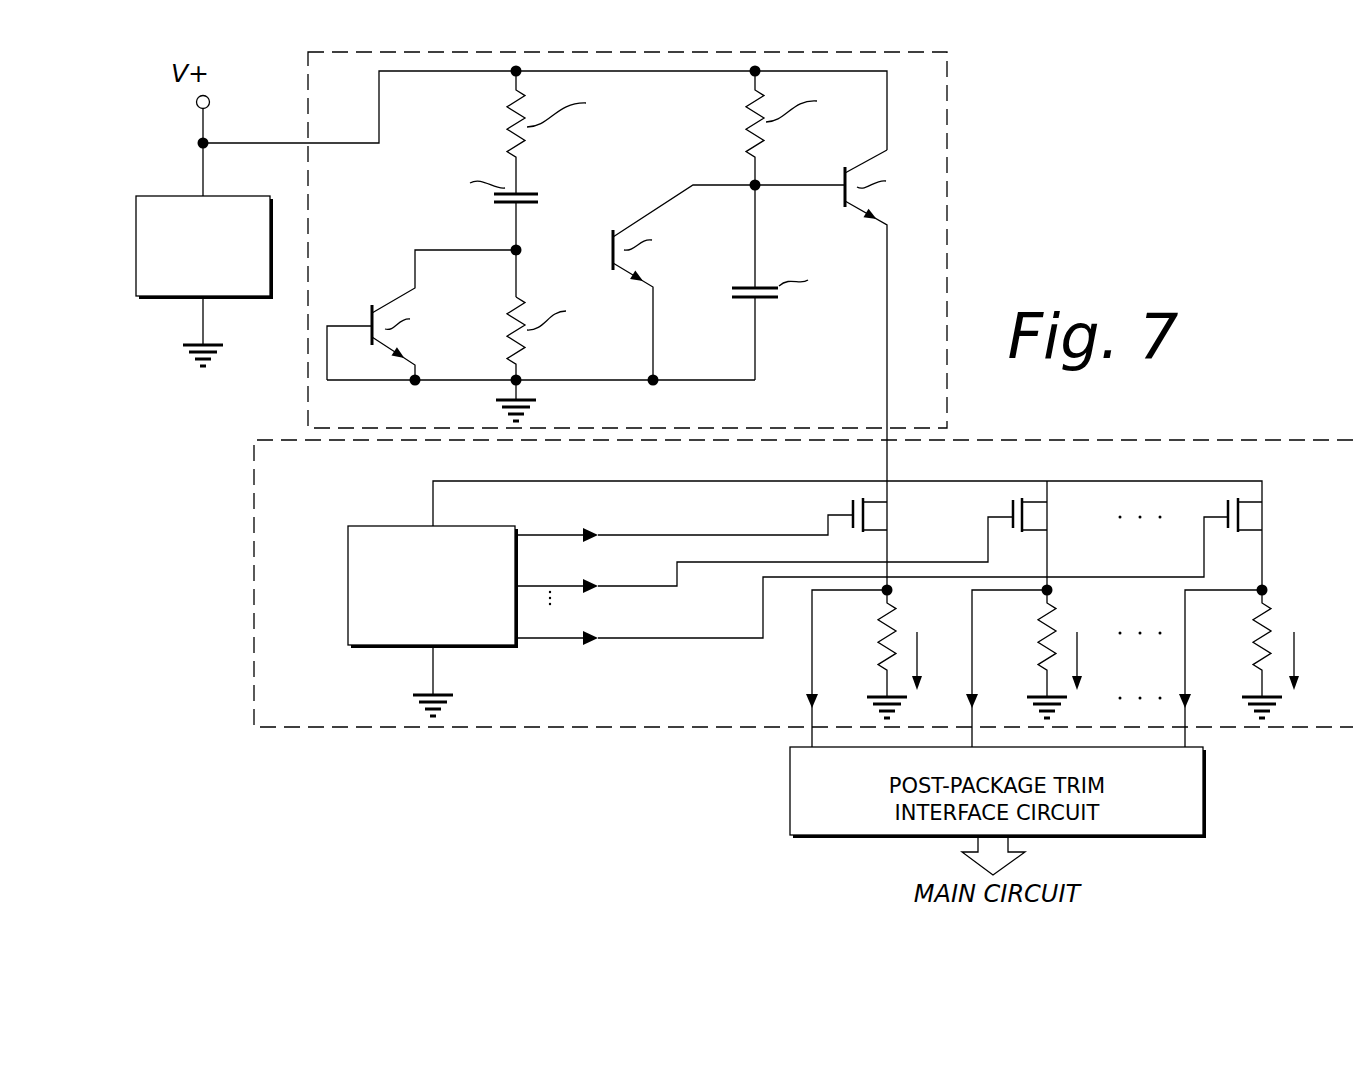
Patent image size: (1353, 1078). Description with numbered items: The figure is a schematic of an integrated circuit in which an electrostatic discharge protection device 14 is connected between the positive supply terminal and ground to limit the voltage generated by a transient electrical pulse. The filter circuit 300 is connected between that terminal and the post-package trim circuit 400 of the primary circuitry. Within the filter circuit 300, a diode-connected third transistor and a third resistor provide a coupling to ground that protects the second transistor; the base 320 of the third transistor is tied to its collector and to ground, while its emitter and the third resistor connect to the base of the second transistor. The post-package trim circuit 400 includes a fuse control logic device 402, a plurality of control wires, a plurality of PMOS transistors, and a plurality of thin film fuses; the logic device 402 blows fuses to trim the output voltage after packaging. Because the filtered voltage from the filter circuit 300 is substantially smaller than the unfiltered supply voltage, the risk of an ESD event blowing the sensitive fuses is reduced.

The electrostatic discharge (ESD) protection device 14 is at (157, 197).
The filter circuit 300 is at (947, 105).
The base 320 is at (372, 326).
The post-package trim circuit 400 is at (254, 520).
The fuse control logic device 402 is at (348, 553).